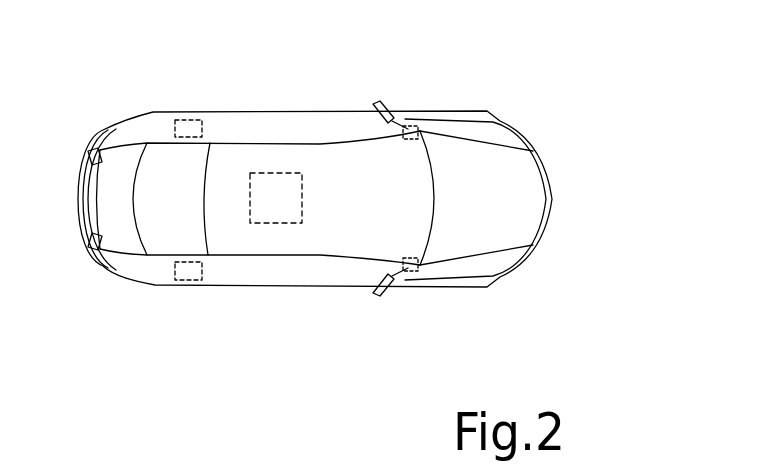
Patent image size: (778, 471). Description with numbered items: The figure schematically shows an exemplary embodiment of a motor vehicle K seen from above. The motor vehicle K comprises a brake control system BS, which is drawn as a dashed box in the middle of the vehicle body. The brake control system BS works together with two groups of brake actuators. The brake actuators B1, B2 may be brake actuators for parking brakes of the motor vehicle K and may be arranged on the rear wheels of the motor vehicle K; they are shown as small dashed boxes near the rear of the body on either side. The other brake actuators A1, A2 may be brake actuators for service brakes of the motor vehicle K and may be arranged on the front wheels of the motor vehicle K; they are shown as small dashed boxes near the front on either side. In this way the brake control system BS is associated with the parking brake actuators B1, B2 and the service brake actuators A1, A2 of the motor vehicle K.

The motor vehicle K is at (572, 206).
The brake actuator A1 is at (412, 125).
The brake actuator A2 is at (412, 273).
The brake actuator B1 is at (187, 125).
The brake actuator B2 is at (187, 272).
The brake control system BS is at (276, 198).